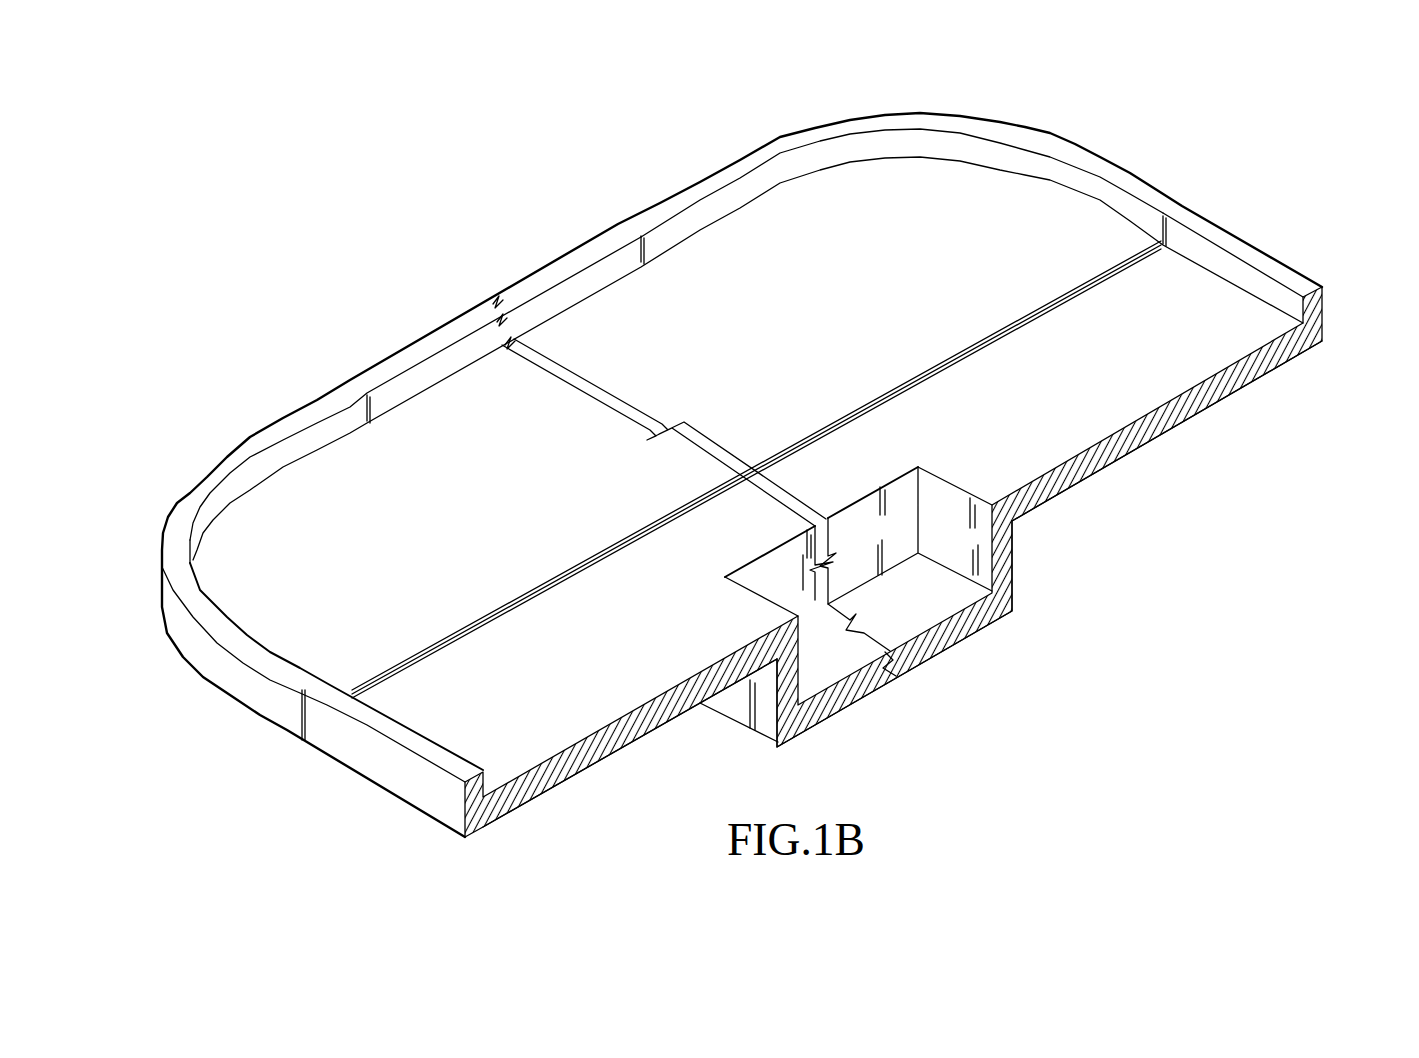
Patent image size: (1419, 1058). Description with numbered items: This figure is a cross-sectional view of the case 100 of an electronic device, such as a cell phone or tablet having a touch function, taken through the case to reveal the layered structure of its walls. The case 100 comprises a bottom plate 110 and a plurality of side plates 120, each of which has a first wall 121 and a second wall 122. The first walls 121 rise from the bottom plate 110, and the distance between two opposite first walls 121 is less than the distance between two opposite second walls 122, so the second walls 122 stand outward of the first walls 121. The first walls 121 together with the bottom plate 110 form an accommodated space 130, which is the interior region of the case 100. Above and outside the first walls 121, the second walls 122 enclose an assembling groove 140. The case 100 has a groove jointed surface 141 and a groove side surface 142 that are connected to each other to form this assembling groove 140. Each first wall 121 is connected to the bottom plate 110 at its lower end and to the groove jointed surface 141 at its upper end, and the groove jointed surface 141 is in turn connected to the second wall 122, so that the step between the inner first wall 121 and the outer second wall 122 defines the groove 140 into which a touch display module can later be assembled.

The case 100 is at (134, 100).
The bottom plate 110 is at (965, 620).
The side plates 120 is at (1338, 420).
The first wall 121 is at (1012, 555).
The second wall 122 is at (1322, 334).
The accommodated space 130 is at (937, 511).
The assembling groove 140 is at (1188, 238).
The groove jointed surface 141 is at (1240, 310).
The groove side surface 142 is at (1126, 217).